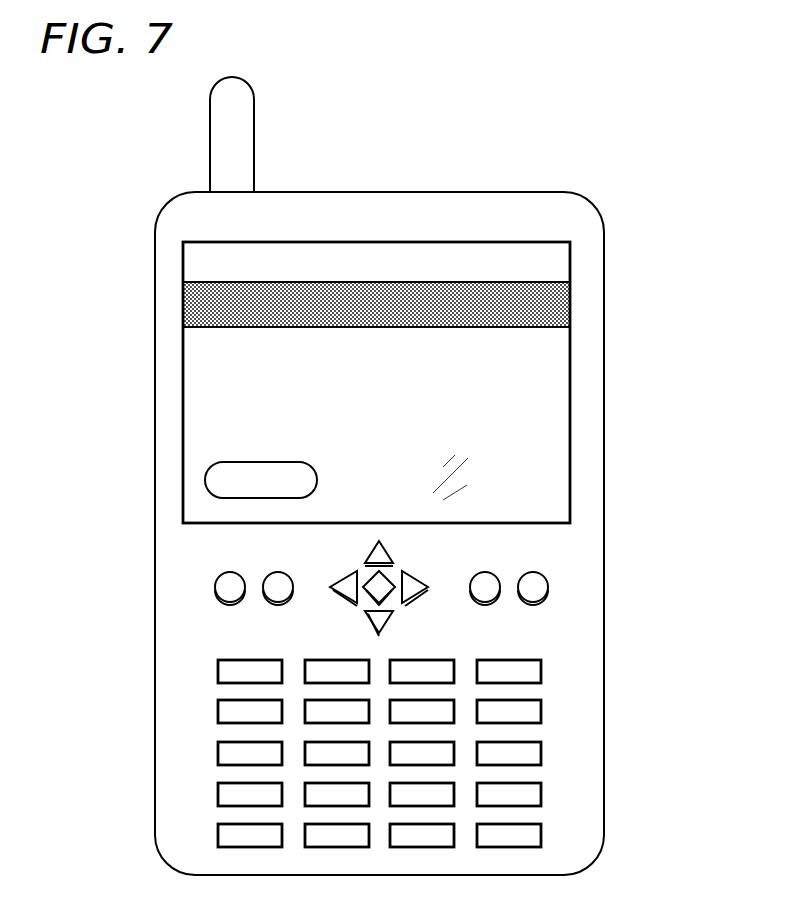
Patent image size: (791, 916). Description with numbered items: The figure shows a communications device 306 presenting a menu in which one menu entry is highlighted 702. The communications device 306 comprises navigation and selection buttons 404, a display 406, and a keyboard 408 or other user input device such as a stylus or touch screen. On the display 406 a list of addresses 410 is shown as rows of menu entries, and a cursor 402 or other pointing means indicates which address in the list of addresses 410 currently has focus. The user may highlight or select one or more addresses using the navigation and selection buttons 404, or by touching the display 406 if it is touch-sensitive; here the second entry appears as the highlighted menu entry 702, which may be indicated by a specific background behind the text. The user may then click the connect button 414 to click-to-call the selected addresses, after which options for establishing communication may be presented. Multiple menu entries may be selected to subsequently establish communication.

The communications device 306 is at (604, 797).
The cursor 402 is at (314, 284).
The navigation and selection buttons 404 is at (430, 578).
The display 406 is at (570, 388).
The keyboard 408 is at (544, 665).
The list of addresses 410 is at (388, 250).
The connect button 414 is at (205, 480).
The highlighted menu entry 702 is at (190, 298).